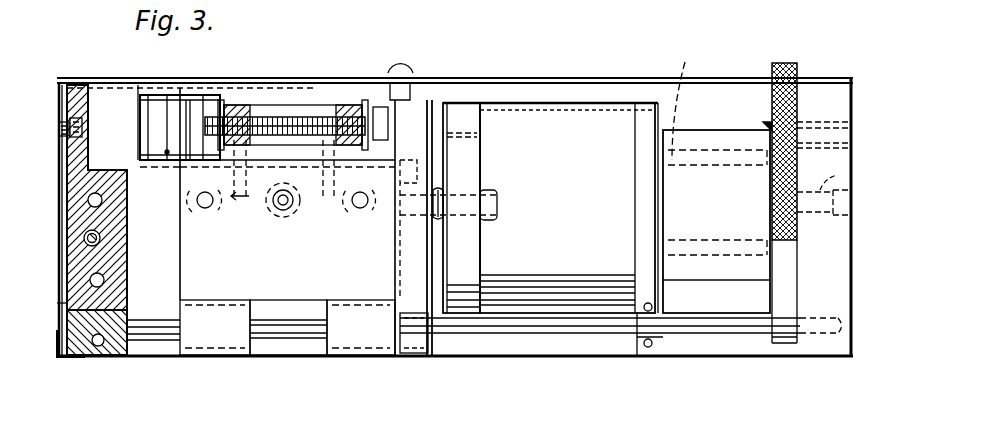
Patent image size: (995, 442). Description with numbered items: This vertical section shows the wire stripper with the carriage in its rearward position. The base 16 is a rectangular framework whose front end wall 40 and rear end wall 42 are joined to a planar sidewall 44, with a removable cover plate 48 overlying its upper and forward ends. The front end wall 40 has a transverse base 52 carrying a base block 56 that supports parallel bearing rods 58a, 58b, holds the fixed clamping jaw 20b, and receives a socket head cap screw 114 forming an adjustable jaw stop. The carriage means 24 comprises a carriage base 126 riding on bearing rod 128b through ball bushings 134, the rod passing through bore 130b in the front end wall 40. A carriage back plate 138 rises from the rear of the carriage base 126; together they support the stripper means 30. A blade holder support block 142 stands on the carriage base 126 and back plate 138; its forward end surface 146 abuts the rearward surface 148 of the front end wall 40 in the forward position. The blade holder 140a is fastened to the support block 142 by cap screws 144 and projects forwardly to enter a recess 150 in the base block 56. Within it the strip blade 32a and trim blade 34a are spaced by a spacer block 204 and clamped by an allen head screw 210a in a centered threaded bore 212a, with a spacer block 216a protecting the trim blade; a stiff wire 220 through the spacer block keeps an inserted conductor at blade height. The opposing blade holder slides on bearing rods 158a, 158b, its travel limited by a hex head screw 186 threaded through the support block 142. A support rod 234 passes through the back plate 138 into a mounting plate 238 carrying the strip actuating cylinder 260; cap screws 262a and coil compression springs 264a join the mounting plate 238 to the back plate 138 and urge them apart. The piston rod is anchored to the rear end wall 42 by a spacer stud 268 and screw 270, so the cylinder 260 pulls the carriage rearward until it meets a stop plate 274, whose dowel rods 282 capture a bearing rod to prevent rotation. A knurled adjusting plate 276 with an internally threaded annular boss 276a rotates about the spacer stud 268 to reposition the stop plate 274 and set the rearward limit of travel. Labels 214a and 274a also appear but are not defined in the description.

The base 16 is at (750, 360).
The clamping jaw 20b is at (59, 128).
The carriage means 24 is at (443, 345).
The stripper means 30 is at (131, 106).
The strip blade 32a is at (150, 130).
The trim blade 34a is at (185, 100).
The front end wall 40 is at (58, 98).
The rear end wall 42 is at (860, 90).
The sidewall 44 is at (717, 78).
The cover plate 48 is at (67, 150).
The transverse base 52 is at (62, 355).
The base block 56 is at (90, 280).
The bearing rod 58a is at (88, 200).
The bearing rod 58b is at (57, 304).
The socket head cap screw 114 is at (84, 238).
The carriage base 126 is at (372, 358).
The bearing rod 128b is at (593, 335).
The bore 130b is at (93, 358).
The ball bushing 134 is at (197, 352).
The carriage back plate 138 is at (416, 356).
The blade holder 140a is at (285, 105).
The blade holder support block 142 is at (193, 263).
The cap screws 144 is at (225, 98).
The forward end surface 146 is at (180, 257).
The rearward planar surface 148 is at (133, 290).
The recess 150 is at (163, 152).
The bearing rod 158a is at (208, 210).
The bearing rod 158b is at (362, 212).
The hex head screw 186 is at (276, 217).
The spacer block 204 is at (178, 95).
The allen head screw 210a is at (312, 117).
The threaded bore 212a is at (252, 103).
The right end cap 214a is at (368, 103).
The spacer block 216a is at (233, 182).
The wire 220 is at (157, 172).
The support rod 234 is at (432, 117).
The mounting plate 238 is at (480, 105).
The strip actuating cylinder 260 is at (585, 103).
The cap screw 262a is at (497, 212).
The coil compression spring 264a is at (436, 207).
The spacer stud 268 is at (702, 102).
The screw 270 is at (852, 182).
The stop plate 274 is at (652, 358).
The gear housing base 274a is at (678, 284).
The adjusting plate 276 is at (785, 63).
The annular boss 276a is at (765, 126).
The dowel rod 282 is at (662, 352).